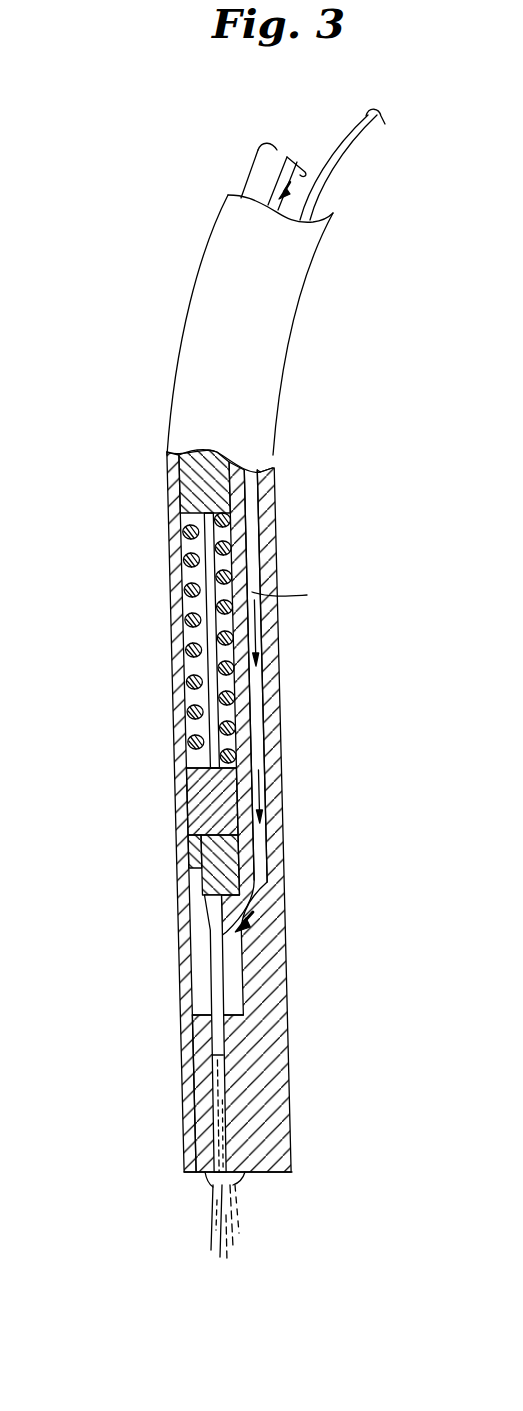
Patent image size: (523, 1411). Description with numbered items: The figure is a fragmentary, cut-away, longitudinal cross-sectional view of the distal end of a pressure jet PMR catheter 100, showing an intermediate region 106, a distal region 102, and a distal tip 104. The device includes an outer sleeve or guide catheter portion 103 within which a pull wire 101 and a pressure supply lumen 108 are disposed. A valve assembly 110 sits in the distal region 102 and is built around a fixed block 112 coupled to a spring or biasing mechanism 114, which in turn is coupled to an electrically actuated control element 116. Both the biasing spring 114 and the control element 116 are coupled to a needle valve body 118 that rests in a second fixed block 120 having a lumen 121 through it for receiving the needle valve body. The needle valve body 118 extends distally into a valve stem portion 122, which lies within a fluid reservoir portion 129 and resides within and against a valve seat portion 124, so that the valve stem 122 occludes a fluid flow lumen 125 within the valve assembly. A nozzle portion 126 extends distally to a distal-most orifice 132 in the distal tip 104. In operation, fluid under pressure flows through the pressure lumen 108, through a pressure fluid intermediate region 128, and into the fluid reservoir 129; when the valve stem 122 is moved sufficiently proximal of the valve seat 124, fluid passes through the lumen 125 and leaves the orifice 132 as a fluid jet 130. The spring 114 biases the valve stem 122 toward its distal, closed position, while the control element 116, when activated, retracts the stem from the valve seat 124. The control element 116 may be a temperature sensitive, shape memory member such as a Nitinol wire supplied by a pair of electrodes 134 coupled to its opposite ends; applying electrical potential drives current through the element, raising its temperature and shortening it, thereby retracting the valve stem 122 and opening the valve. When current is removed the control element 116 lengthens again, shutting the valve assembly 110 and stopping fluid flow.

The pressure jet PMR catheter 100 is at (128, 429).
The pull wire 101 is at (255, 168).
The distal region 102 is at (282, 858).
The outer sleeve or guide catheter portion 103 is at (192, 282).
The distal tip 104 is at (247, 1175).
The intermediate region 106 is at (292, 333).
The pressure supply lumen 108 is at (286, 196).
The valve assembly 110 is at (272, 890).
The fixed block 112 is at (192, 493).
The spring or biasing mechanism 114 is at (187, 530).
The electrically actuated control element 116 is at (213, 633).
The needle valve body 118 is at (188, 764).
The fixed block 120 is at (200, 838).
The lumen 121 is at (208, 868).
The valve stem portion 122 is at (213, 978).
The valve seat portion 124 is at (213, 1050).
The fluid flow lumen 125 is at (232, 1090).
The nozzle portion 126 is at (227, 1153).
The pressure fluid intermediate region 128 is at (258, 697).
The fluid reservoir portion 129 is at (286, 974).
The fluid jet 130 is at (232, 1240).
The distal-most orifice 132 is at (210, 1173).
The pair of electrodes 134 is at (352, 140).